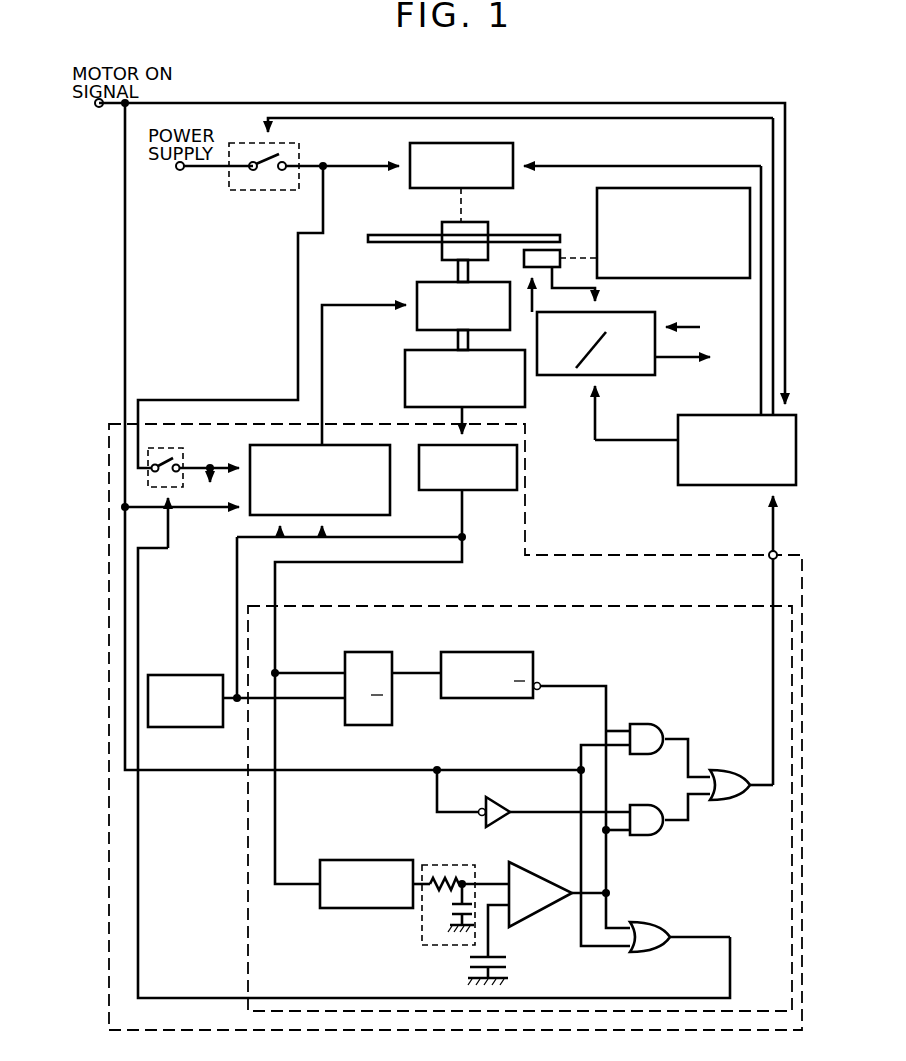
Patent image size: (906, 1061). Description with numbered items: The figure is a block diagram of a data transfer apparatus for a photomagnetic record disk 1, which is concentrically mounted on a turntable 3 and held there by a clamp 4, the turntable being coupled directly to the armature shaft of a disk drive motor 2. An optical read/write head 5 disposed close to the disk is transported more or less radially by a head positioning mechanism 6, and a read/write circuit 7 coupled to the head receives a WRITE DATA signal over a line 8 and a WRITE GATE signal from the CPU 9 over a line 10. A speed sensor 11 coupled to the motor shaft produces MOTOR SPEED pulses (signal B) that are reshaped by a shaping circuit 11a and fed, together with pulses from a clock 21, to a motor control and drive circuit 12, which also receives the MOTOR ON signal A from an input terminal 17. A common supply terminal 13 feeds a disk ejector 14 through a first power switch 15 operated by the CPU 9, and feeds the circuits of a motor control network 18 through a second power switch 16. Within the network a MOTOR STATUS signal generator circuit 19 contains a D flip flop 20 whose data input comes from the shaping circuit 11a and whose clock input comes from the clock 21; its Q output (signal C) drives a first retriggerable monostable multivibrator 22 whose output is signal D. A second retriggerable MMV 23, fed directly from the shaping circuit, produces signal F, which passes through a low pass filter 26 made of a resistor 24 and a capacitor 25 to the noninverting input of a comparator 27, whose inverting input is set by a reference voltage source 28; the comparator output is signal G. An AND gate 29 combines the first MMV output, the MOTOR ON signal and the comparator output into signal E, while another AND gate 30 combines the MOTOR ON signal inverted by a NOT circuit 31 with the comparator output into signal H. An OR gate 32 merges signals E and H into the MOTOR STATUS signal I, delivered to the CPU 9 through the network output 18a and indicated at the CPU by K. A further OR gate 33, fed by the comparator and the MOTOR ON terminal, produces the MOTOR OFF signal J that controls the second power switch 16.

The photomagnetic record disk 1 is at (490, 235).
The disk drive motor 2 is at (417, 318).
The turntable 3 is at (441, 256).
The clamp 4 is at (441, 228).
The optical read/write head 5 is at (560, 252).
The head positioning mechanism 6 is at (597, 192).
The read/write circuit 7 is at (576, 376).
The line 8 is at (690, 326).
The central processor unit (CPU) 9 is at (678, 455).
The line 10 is at (618, 440).
The speed sensor 11 is at (405, 365).
The shaping circuit 11a is at (462, 494).
The motor control and drive circuit 12 is at (390, 470).
The supply terminal 13 is at (181, 171).
The disk ejector 14 is at (513, 146).
The power switch 15 is at (265, 191).
The power switch 16 is at (184, 460).
The MOTOR ON signal input terminal 17 is at (98, 108).
The motor control network 18 is at (700, 555).
The output 18a is at (777, 551).
The MOTOR STATUS signal generator circuit 19 is at (690, 606).
The D flip flop 20 is at (366, 652).
The clock 21 is at (191, 675).
The retriggerable monostable multivibrator 22 is at (478, 652).
The second retriggerable MMV 23 is at (365, 860).
The resistor 24 is at (442, 897).
The capacitor 25 is at (448, 914).
The low pass filter 26 is at (445, 865).
The comparator 27 is at (550, 878).
The reference voltage source 28 is at (494, 958).
The AND gate 29 is at (648, 724).
The AND gate 30 is at (652, 836).
The NOT circuit 31 is at (498, 806).
The OR gate 32 is at (734, 770).
The OR gate 33 is at (645, 922).
The MOTOR ON signal A is at (123, 108).
The motor speed signal B is at (417, 292).
The flip flop Q output signal C is at (415, 670).
The first MMV output signal D is at (580, 686).
The first AND gate output signal E is at (698, 742).
The second MMV output signal F is at (417, 880).
The comparator output signal G is at (573, 896).
The second AND gate output signal H is at (690, 818).
The MOTOR STATUS signal I is at (768, 789).
The MOTOR OFF signal J is at (712, 936).
The CPU signal line K is at (760, 298).